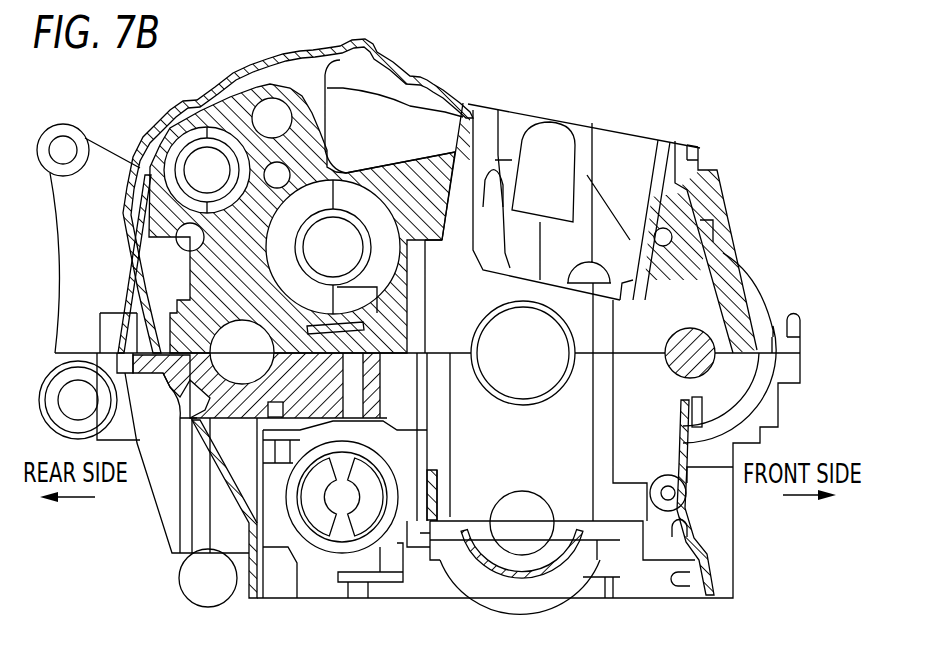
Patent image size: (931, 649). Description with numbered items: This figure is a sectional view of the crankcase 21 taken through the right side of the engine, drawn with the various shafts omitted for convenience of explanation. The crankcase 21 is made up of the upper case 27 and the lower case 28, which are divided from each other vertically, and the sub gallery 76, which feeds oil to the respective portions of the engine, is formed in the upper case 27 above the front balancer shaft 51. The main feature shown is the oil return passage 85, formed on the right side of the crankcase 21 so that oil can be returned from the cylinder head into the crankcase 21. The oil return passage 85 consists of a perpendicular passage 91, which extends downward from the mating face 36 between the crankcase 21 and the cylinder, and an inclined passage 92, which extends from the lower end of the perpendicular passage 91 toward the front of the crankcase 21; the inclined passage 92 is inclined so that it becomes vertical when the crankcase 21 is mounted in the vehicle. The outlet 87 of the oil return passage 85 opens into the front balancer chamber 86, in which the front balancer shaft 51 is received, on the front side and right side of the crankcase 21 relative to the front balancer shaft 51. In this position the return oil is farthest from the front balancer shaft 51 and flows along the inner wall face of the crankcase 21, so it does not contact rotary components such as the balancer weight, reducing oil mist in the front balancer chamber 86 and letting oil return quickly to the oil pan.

The crankcase 21 is at (730, 120).
The upper case 27 is at (695, 145).
The lower case 28 is at (697, 530).
The mating face 36 is at (667, 142).
The front balancer shaft 51 is at (697, 333).
The sub gallery 76 is at (655, 232).
The oil return passage 85 is at (739, 247).
The front balancer chamber 86 is at (682, 300).
The outlet 87 is at (778, 410).
The perpendicular passage 91 is at (675, 178).
The inclined passage 92 is at (683, 223).